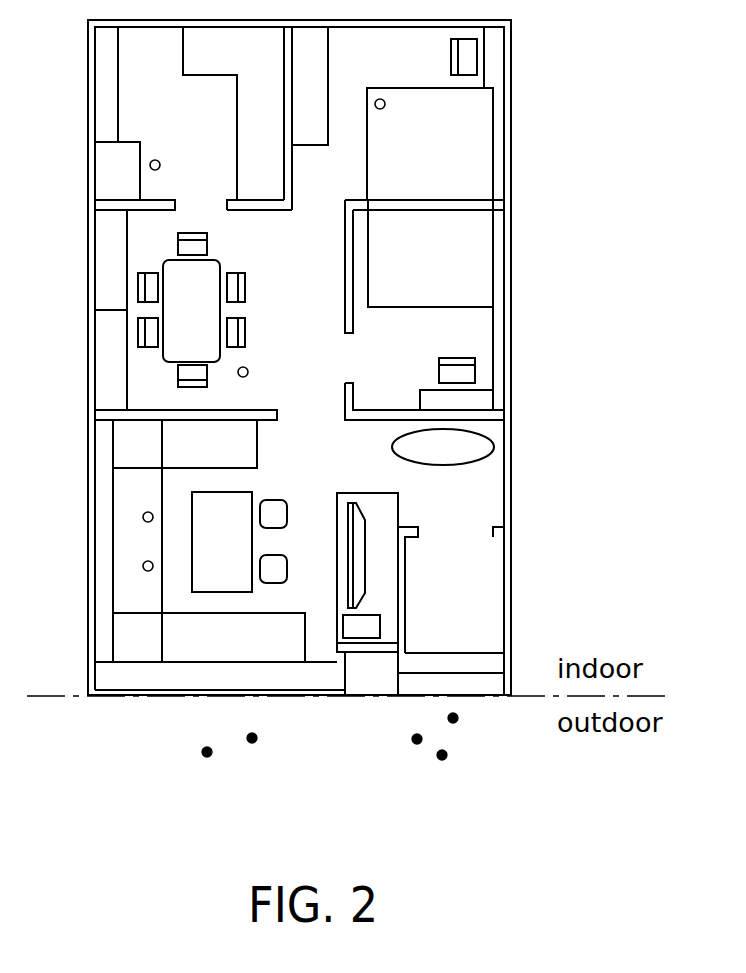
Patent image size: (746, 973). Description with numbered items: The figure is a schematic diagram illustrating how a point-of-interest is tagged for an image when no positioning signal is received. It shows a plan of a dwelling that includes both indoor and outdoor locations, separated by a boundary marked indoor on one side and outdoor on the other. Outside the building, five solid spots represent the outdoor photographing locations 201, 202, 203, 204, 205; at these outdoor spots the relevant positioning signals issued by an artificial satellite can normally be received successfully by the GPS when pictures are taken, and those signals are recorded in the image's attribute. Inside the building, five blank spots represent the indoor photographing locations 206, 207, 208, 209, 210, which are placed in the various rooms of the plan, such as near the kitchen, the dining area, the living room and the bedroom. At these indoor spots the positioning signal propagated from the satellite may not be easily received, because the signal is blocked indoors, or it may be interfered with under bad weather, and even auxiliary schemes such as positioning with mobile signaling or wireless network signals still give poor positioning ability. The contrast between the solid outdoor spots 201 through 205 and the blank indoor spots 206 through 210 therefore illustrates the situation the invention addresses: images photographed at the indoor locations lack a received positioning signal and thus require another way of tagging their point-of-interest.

The outdoor photographing location 201 is at (207, 757).
The outdoor photographing location 202 is at (252, 743).
The outdoor photographing location 203 is at (412, 742).
The outdoor photographing location 204 is at (442, 760).
The outdoor photographing location 205 is at (457, 722).
The indoor photographing location 206 is at (143, 566).
The indoor photographing location 207 is at (143, 517).
The indoor photographing location 208 is at (248, 372).
The indoor photographing location 209 is at (383, 100).
The indoor photographing location 210 is at (150, 165).